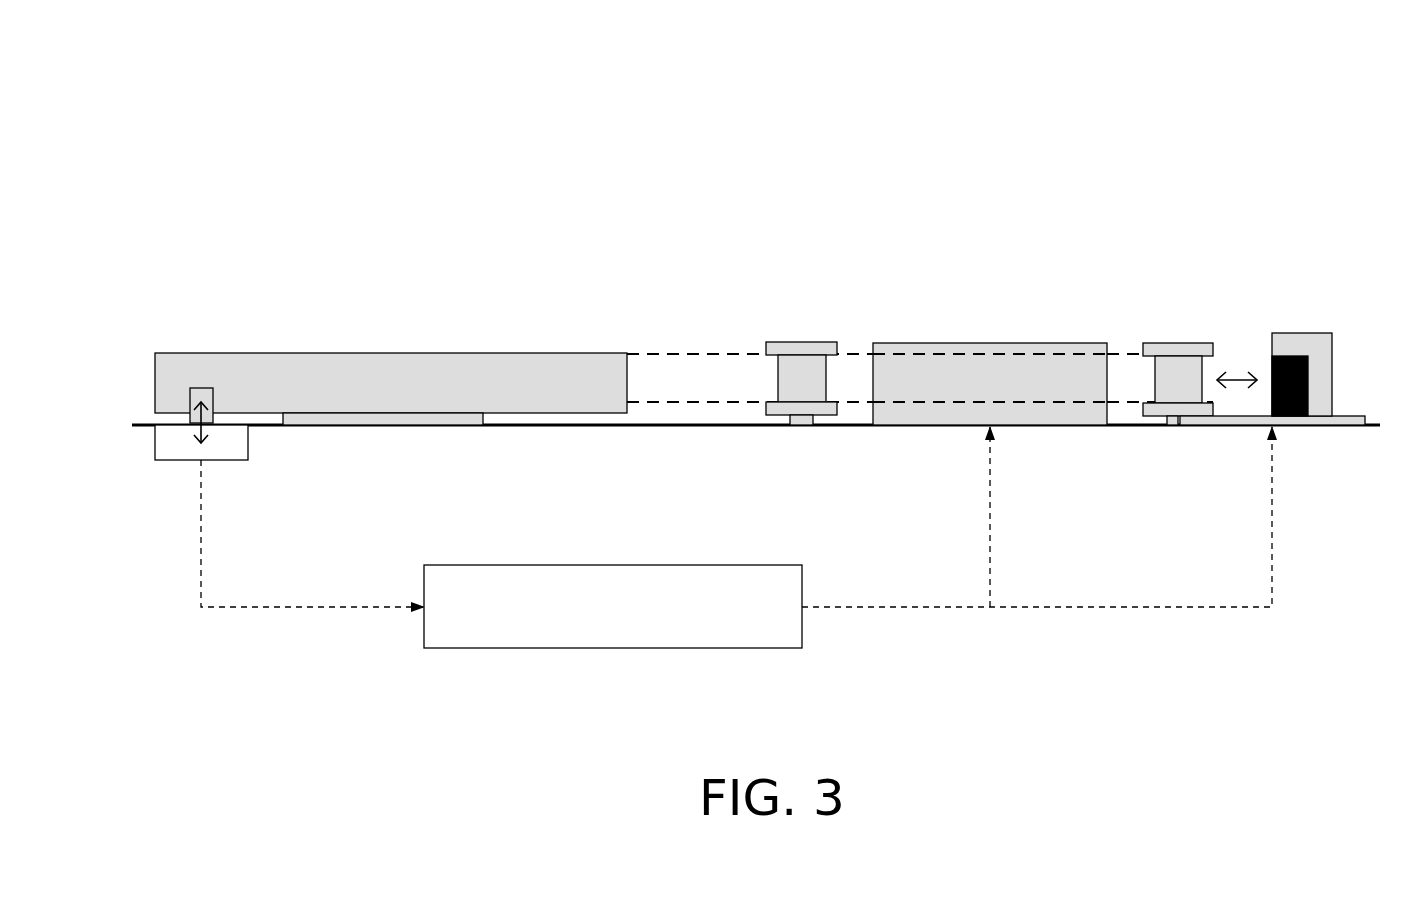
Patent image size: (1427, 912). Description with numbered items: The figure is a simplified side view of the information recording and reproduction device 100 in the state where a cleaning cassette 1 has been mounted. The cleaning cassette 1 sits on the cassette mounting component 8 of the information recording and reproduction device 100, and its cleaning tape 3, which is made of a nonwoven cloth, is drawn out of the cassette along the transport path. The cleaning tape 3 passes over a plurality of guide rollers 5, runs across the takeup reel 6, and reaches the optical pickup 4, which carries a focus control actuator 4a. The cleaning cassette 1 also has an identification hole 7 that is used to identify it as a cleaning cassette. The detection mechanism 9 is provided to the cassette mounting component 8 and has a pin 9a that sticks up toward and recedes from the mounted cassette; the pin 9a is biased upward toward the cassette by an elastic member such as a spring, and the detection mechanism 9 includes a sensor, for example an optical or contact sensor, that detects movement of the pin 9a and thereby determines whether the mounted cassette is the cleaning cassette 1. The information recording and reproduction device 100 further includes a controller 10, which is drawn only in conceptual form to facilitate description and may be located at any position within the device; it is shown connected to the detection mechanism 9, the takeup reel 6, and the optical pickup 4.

The information recording and reproduction device 100 is at (755, 108).
The cleaning cassette 1 is at (327, 355).
The cleaning tape 3 is at (693, 350).
The optical pickup 4 is at (1292, 333).
The focus control actuator 4a is at (1308, 385).
The guide rollers 5 is at (817, 345).
The takeup reel 6 is at (949, 343).
The identification hole 7 is at (180, 405).
The cassette mounting component 8 is at (398, 444).
The detection mechanism 9 is at (138, 455).
The pin 9a is at (203, 392).
The controller 10 is at (515, 568).